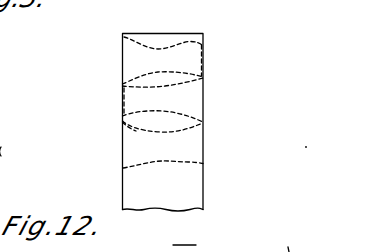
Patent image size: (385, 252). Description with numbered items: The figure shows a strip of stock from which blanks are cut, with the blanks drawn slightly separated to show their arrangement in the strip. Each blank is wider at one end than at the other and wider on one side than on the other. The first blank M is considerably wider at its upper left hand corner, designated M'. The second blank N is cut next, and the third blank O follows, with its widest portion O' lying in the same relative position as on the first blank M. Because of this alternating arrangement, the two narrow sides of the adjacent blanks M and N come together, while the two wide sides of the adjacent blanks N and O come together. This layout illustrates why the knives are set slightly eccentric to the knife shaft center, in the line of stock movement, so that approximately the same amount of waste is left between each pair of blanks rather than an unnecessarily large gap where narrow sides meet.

The widest portion of first blank M' is at (139, 105).
The first blank M is at (189, 38).
The second blank N is at (165, 105).
The widest portion of third blank O' is at (98, 142).
The third blank O is at (188, 168).